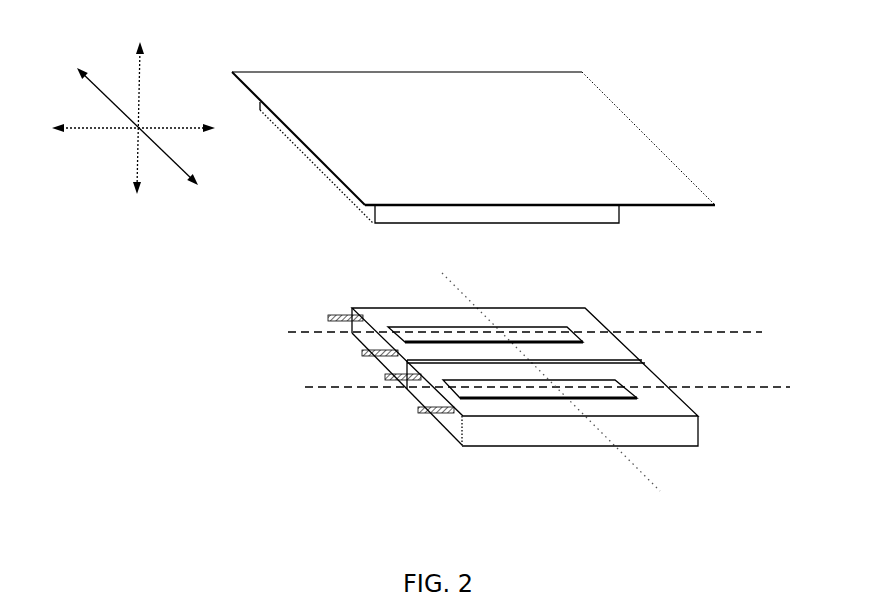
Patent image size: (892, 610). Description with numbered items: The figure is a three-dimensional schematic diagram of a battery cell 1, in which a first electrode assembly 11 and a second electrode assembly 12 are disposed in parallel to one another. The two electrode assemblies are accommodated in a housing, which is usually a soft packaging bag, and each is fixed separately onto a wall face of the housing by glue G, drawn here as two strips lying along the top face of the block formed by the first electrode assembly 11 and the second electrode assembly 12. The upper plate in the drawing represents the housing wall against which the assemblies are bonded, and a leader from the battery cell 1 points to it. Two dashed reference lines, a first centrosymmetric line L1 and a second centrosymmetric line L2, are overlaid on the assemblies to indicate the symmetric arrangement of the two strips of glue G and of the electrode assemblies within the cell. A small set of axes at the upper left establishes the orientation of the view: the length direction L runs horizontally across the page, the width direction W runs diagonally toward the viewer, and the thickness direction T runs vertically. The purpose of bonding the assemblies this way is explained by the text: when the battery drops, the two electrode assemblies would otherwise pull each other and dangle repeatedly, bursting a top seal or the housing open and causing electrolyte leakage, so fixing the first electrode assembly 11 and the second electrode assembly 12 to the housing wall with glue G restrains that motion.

The battery cell 1 is at (648, 117).
The first electrode assembly 11 is at (657, 402).
The second electrode assembly 12 is at (580, 322).
The glue G is at (430, 332).
The first centrosymmetric line L1 is at (552, 359).
The second centrosymmetric line L2 is at (565, 392).
The thickness direction T is at (146, 109).
The length direction L is at (140, 130).
The width direction W is at (151, 136).